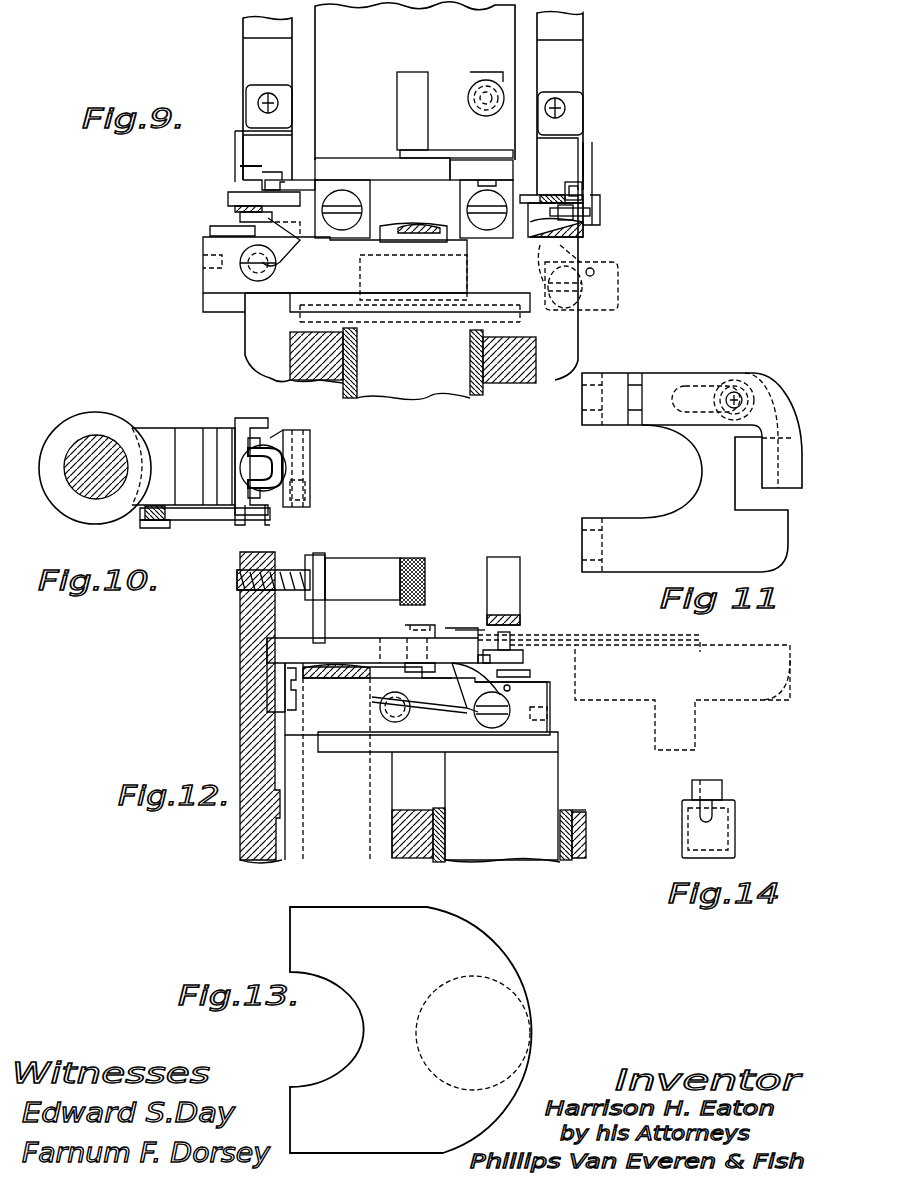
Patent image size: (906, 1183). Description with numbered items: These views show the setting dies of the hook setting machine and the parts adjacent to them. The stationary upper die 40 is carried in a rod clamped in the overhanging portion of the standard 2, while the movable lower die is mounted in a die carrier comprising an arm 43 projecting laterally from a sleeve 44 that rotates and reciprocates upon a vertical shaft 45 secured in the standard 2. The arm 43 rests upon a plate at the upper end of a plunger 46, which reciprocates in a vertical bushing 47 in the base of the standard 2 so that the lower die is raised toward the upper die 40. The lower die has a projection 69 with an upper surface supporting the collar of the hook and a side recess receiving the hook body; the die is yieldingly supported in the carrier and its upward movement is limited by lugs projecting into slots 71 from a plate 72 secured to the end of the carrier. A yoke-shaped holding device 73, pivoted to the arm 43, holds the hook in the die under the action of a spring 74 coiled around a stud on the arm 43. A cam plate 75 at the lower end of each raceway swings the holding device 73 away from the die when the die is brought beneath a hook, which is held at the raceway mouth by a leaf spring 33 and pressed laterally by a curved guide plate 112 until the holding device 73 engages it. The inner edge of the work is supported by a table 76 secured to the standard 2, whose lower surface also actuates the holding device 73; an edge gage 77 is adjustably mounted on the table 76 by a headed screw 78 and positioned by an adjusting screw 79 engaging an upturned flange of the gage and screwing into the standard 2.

In FIG. 9, the standard 2 is at (522, 372).
In FIG. 12, the standard 2 is at (240, 620).
In FIG. 9, the leaf spring 33 is at (582, 196).
In FIG. 9, the upper die 40 is at (410, 84).
In FIG. 12, the upper die 40 is at (515, 590).
In FIG. 9, the arm 43 is at (340, 262).
In FIG. 10, the arm 43 is at (160, 430).
In FIG. 12, the arm 43 is at (340, 690).
In FIG. 10, the sleeve 44 is at (280, 470).
In FIG. 12, the sleeve 44 is at (382, 793).
In FIG. 14, the sleeve 44 is at (728, 832).
In FIG. 9, the vertical shaft 45 is at (426, 228).
In FIG. 10, the vertical shaft 45 is at (92, 435).
In FIG. 9, the plunger 46 is at (446, 392).
In FIG. 12, the plunger 46 is at (552, 795).
In FIG. 13, the plunger 46 is at (518, 1025).
In FIG. 9, the bushing 47 is at (512, 375).
In FIG. 12, the bushing 47 is at (567, 815).
In FIG. 9, the projection 69 is at (250, 208).
In FIG. 10, the projection 69 is at (275, 460).
In FIG. 12, the projection 69 is at (510, 660).
In FIG. 14, the projection 69 is at (718, 788).
In FIG. 9, the slots 71 is at (240, 220).
In FIG. 10, the slots 71 is at (265, 458).
In FIG. 12, the slots 71 is at (518, 664).
In FIG. 14, the slots 71 is at (705, 810).
In FIG. 9, the plate 72 is at (205, 280).
In FIG. 10, the plate 72 is at (295, 472).
In FIG. 12, the plate 72 is at (550, 728).
In FIG. 9, the holding device 73 is at (255, 270).
In FIG. 10, the holding device 73 is at (240, 462).
In FIG. 12, the holding device 73 is at (468, 668).
In FIG. 10, the spring 74 is at (210, 515).
In FIG. 12, the spring 74 is at (455, 712).
In FIG. 9, the cam plate 75 is at (288, 195).
In FIG. 9, the table 76 is at (365, 175).
In FIG. 11, the table 76 is at (617, 525).
In FIG. 12, the table 76 is at (438, 648).
In FIG. 9, the edge gage 77 is at (437, 150).
In FIG. 11, the edge gage 77 is at (795, 447).
In FIG. 12, the edge gage 77 is at (452, 633).
In FIG. 11, the headed screw 78 is at (733, 408).
In FIG. 12, the headed screw 78 is at (415, 622).
In FIG. 9, the adjusting screw 79 is at (486, 80).
In FIG. 12, the adjusting screw 79 is at (340, 572).
In FIG. 9, the guide plate 112 is at (262, 175).